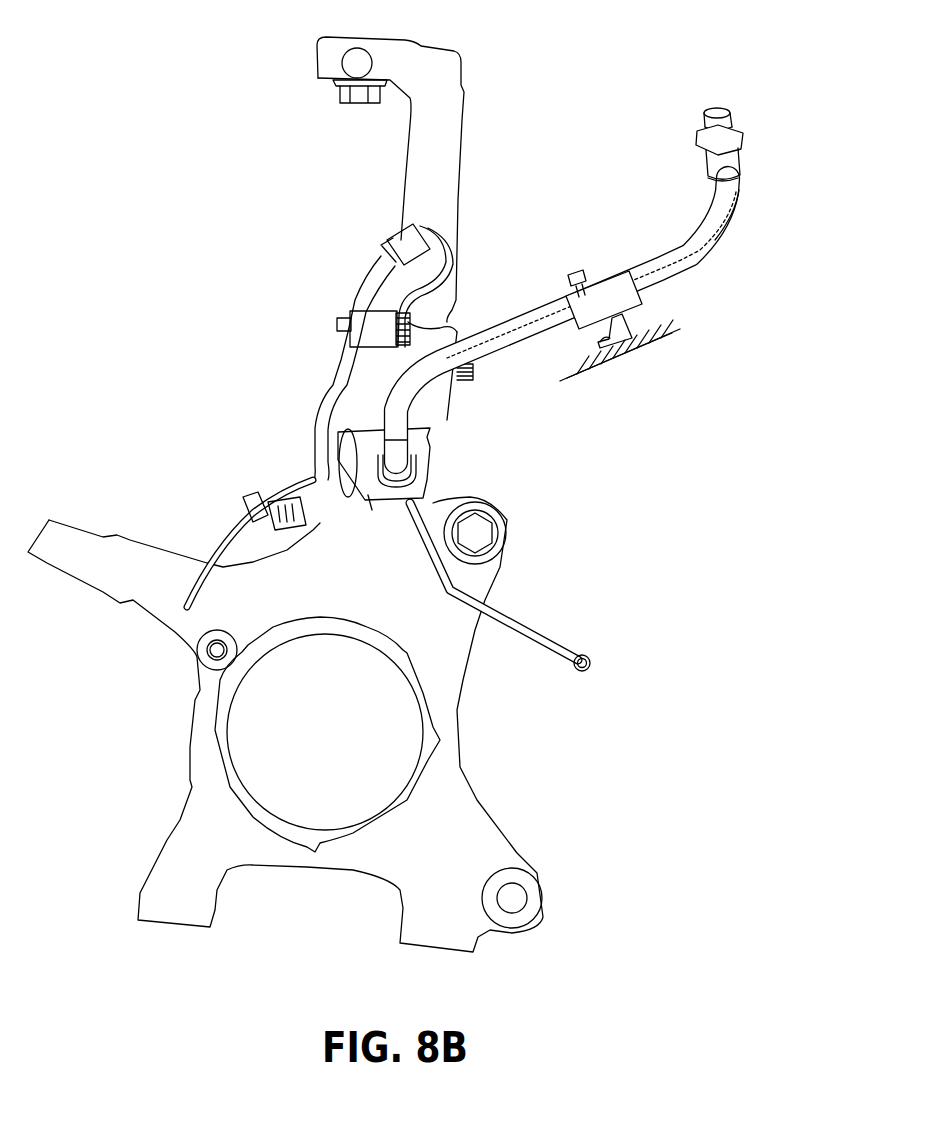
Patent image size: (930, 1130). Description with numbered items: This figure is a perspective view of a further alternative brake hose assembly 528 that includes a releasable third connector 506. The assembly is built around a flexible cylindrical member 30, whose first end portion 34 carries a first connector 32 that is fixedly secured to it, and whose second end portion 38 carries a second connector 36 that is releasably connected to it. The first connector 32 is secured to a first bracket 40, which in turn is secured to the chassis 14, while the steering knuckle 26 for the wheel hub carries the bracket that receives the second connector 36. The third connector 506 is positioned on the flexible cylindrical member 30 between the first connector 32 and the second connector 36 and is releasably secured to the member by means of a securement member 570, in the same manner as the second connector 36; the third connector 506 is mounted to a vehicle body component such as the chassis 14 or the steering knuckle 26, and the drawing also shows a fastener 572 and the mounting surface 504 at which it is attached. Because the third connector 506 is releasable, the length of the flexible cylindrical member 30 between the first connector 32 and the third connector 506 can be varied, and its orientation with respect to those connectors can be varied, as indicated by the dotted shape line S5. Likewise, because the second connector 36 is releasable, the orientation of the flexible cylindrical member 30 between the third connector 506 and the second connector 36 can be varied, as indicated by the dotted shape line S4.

The chassis 14 is at (337, 591).
The steering knuckle 26 is at (654, 356).
The flexible cylindrical member 30 is at (508, 340).
The first connector 32 is at (409, 452).
The first end portion 34 is at (402, 434).
The second connector 36 is at (795, 89).
The second end portion 38 is at (744, 182).
The first bracket 40 is at (373, 494).
The mounting surface 504 is at (645, 333).
The third connector 506 is at (610, 256).
The brake hose assembly 528 is at (565, 132).
The securement member 570 is at (553, 274).
The fastener 572 is at (574, 268).
The dotted shape line S4 is at (740, 225).
The dotted shape line S5 is at (372, 410).